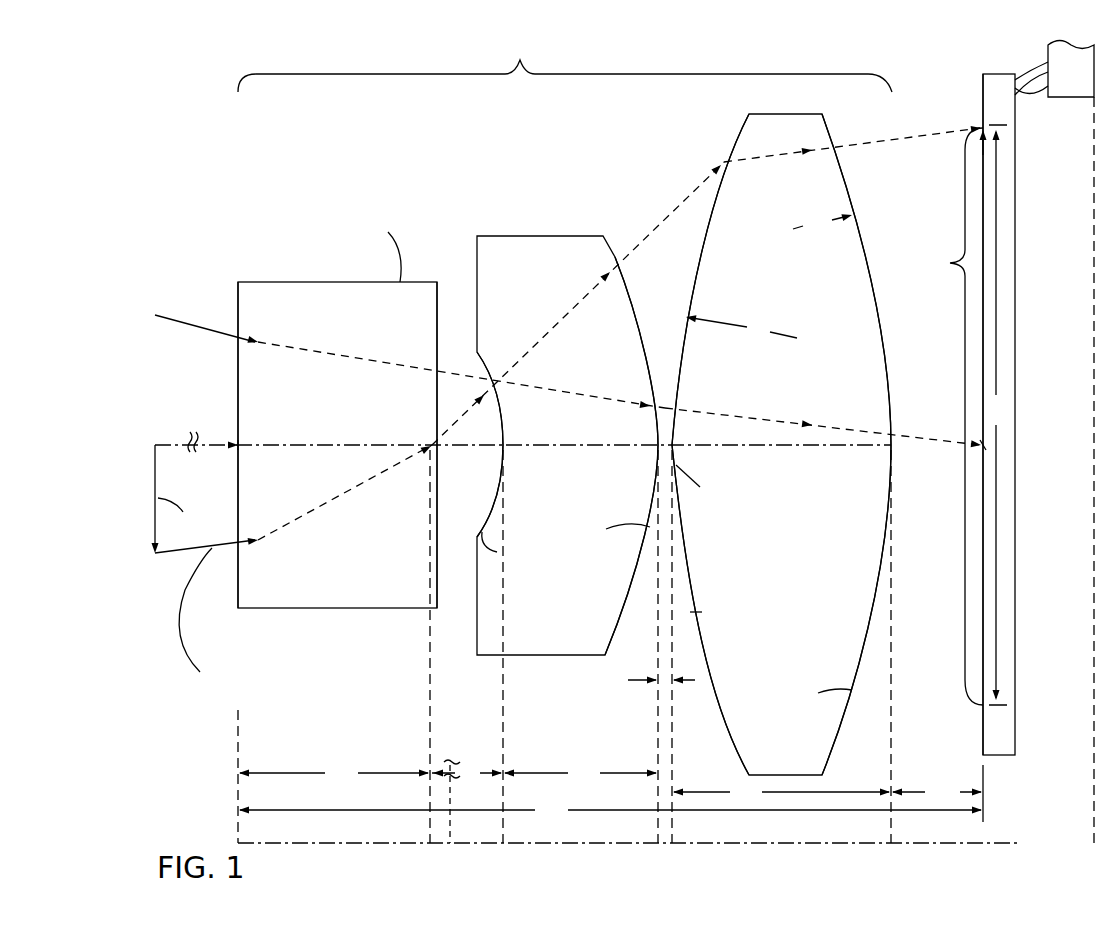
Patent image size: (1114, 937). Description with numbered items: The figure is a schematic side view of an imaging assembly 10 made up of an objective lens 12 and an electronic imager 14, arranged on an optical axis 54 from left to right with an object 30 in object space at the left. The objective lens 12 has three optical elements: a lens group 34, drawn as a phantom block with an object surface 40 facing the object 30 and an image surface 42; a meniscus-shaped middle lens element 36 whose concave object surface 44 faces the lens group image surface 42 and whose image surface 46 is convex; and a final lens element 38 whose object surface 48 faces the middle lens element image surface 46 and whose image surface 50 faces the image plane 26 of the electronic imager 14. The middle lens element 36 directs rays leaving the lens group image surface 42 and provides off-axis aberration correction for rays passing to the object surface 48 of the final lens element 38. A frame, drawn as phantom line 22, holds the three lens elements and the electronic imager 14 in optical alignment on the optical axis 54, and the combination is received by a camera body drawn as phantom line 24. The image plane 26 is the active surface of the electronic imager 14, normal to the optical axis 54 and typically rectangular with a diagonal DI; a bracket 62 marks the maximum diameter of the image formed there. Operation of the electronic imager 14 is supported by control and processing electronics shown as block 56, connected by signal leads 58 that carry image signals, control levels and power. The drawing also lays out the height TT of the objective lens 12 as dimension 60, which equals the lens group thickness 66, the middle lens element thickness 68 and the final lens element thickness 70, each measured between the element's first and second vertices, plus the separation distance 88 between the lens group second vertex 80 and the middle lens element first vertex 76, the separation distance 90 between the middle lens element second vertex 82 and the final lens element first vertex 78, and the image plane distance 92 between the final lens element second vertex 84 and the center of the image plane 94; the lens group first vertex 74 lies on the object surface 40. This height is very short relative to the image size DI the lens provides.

The imaging assembly 10 is at (228, 100).
The objective lens 12 is at (518, 55).
The electronic imager 14 is at (997, 74).
The frame 22 is at (982, 89).
The camera body 24 is at (1094, 258).
The image plane 26 is at (983, 592).
The object 30 is at (158, 487).
The lens group 34 is at (324, 556).
The middle lens element 36 is at (541, 634).
The final lens element 38 is at (738, 288).
The object surface 40 is at (240, 416).
The image surface 42 is at (437, 404).
The object surface 44 is at (492, 388).
The image surface 46 is at (643, 331).
The object surface 48 is at (678, 362).
The image surface 50 is at (868, 630).
The optical axis 54 is at (620, 445).
The control and processing electronics 56 is at (1060, 92).
The signal leads 58 is at (1048, 85).
The height TT dimension 60 is at (610, 810).
The bracket 62 is at (937, 415).
The lens group thickness dimension 66 is at (333, 776).
The middle lens element thickness dimension 68 is at (580, 773).
The final lens element thickness dimension 70 is at (781, 792).
The lens group first vertex 74 is at (240, 445).
The middle lens element first vertex 76 is at (505, 447).
The final lens element first vertex 78 is at (673, 445).
The lens group second vertex 80 is at (432, 445).
The middle lens element second vertex 82 is at (658, 448).
The final lens element second vertex 84 is at (891, 448).
The separation distance 88 is at (467, 801).
The separation distance 90 is at (649, 680).
The image plane distance 92 is at (937, 792).
The center of the image plane 94 is at (984, 445).